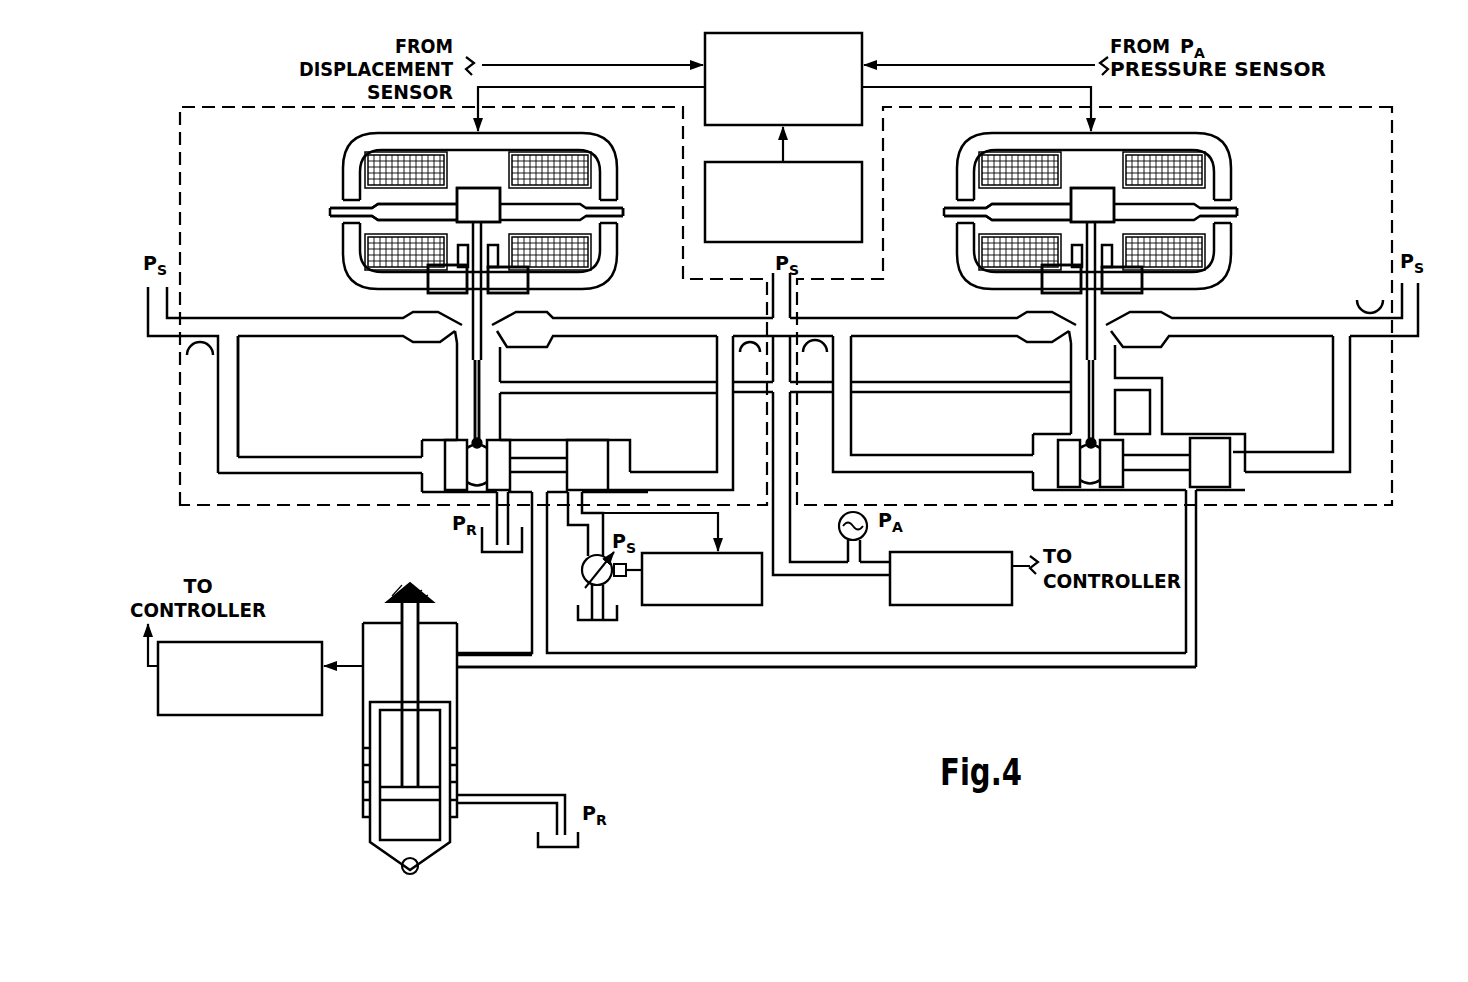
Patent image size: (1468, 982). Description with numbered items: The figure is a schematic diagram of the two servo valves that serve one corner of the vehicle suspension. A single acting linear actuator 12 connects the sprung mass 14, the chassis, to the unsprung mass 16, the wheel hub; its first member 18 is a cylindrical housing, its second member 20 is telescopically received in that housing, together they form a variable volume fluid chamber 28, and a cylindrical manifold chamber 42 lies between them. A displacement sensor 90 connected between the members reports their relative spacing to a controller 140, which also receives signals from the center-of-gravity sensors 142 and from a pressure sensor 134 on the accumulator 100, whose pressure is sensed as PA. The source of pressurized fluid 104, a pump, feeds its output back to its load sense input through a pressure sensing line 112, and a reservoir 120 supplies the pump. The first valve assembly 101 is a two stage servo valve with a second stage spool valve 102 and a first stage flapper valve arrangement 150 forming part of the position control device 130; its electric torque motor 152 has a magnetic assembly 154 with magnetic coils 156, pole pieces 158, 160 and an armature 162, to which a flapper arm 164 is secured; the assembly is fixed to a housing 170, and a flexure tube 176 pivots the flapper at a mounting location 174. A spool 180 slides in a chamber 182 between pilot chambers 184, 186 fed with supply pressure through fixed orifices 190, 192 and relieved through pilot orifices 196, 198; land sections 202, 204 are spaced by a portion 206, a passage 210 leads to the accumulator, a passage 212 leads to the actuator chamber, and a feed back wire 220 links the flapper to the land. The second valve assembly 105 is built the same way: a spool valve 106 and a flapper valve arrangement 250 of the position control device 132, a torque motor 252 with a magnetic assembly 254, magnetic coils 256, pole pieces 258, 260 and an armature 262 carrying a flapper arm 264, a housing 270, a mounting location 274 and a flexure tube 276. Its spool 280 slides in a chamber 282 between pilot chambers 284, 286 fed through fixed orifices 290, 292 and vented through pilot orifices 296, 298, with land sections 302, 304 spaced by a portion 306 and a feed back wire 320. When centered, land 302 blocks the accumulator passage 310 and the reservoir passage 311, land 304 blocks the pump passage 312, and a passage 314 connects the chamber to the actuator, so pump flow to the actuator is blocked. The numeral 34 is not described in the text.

The actuator 12 is at (367, 596).
The sprung mass 14 is at (395, 585).
The unsprung mass 16 is at (437, 873).
The first member 18 is at (363, 684).
The second member 20 is at (377, 830).
The variable volume fluid chamber 28 is at (437, 677).
The second servo valve 34 is at (1140, 495).
The cylindrical manifold chamber 42 is at (362, 767).
The displacement sensor 90 is at (173, 696).
The accumulator 100 is at (838, 515).
The first valve assembly 101 is at (1262, 96).
The electrically controlled valve 102 is at (1272, 300).
The source of pressurized fluid 104 is at (584, 588).
The second valve assembly 105 is at (250, 106).
The electrically controlled valve 106 is at (291, 298).
The pressure sensing line 112 is at (713, 606).
The reservoir 120 is at (500, 556).
The position control device 130 is at (1295, 215).
The position control device 132 is at (285, 214).
The pressure sensor 134 is at (942, 606).
The controller 140 is at (727, 48).
The center-of-gravity sensors 142 is at (774, 163).
The first stage flapper valve arrangement 150 is at (1017, 349).
The electric torque motor 152 is at (965, 283).
The magnetic assembly 154 is at (956, 150).
The magnetic coils 156 is at (1007, 171).
The pole piece 158 is at (1226, 200).
The pole piece 160 is at (1228, 228).
The armature 162 is at (1240, 211).
The flapper arm 164 is at (1120, 288).
The housing 170 is at (1057, 281).
The mounting location 174 is at (1088, 256).
The flexure tube 176 is at (1087, 264).
The spool 180 is at (1211, 453).
The chamber 182 is at (1236, 453).
The pilot chamber 184 is at (1040, 452).
The pilot chamber 186 is at (1240, 480).
The fixed orifice 190 is at (808, 311).
The fixed orifice 192 is at (1358, 352).
The pilot orifice 196 is at (1063, 330).
The pilot orifice 198 is at (1124, 336).
The land section 202 is at (1075, 473).
The land section 204 is at (1217, 476).
The portion 206 is at (1162, 458).
The passage 210 is at (1068, 388).
The passage 212 is at (1198, 611).
The feed back wire 220 is at (1092, 404).
The first stage flapper valve arrangement 250 is at (398, 345).
The electric torque motor 252 is at (341, 137).
The magnetic assembly 254 is at (313, 221).
The magnetic coils 256 is at (470, 267).
The pole piece 258 is at (604, 200).
The pole piece 260 is at (606, 228).
The armature 262 is at (623, 212).
The flapper arm 264 is at (497, 286).
The housing 270 is at (443, 284).
The mounting location 274 is at (470, 256).
The flexure tube 276 is at (467, 263).
The spool 280 is at (618, 456).
The chamber 282 is at (549, 445).
The pilot chamber 284 is at (431, 453).
The pilot chamber 286 is at (615, 462).
The fixed orifice 290 is at (205, 312).
The fixed orifice 292 is at (758, 311).
The pilot orifice 296 is at (448, 333).
The pilot orifice 298 is at (492, 332).
The land section 302 is at (457, 472).
The land section 304 is at (597, 474).
The portion 306 is at (522, 460).
The passage 310 is at (590, 387).
The passage 311 is at (478, 495).
The passage 312 is at (582, 516).
The passage 314 is at (540, 588).
The feed back wire 320 is at (476, 406).